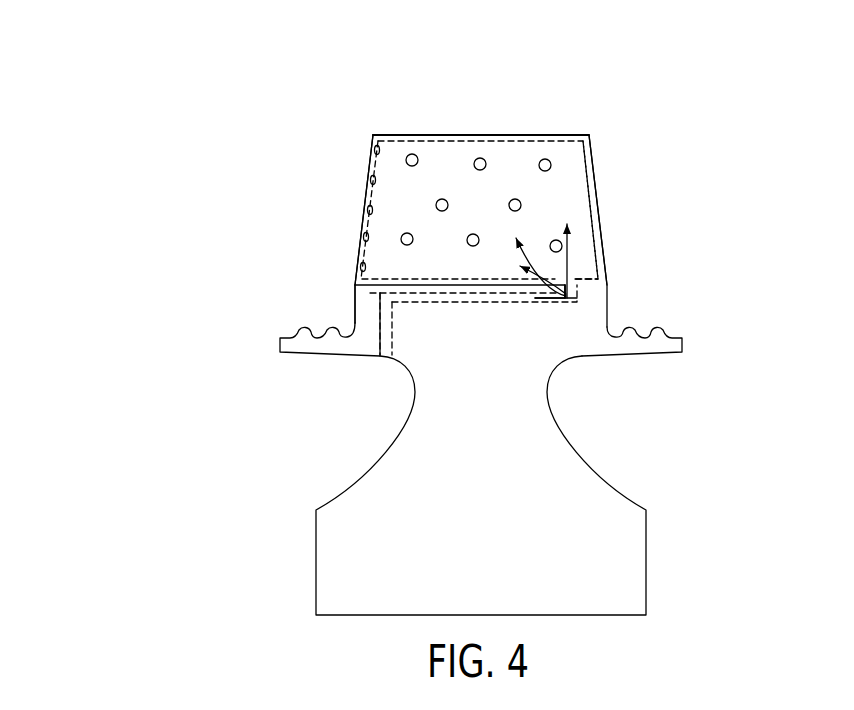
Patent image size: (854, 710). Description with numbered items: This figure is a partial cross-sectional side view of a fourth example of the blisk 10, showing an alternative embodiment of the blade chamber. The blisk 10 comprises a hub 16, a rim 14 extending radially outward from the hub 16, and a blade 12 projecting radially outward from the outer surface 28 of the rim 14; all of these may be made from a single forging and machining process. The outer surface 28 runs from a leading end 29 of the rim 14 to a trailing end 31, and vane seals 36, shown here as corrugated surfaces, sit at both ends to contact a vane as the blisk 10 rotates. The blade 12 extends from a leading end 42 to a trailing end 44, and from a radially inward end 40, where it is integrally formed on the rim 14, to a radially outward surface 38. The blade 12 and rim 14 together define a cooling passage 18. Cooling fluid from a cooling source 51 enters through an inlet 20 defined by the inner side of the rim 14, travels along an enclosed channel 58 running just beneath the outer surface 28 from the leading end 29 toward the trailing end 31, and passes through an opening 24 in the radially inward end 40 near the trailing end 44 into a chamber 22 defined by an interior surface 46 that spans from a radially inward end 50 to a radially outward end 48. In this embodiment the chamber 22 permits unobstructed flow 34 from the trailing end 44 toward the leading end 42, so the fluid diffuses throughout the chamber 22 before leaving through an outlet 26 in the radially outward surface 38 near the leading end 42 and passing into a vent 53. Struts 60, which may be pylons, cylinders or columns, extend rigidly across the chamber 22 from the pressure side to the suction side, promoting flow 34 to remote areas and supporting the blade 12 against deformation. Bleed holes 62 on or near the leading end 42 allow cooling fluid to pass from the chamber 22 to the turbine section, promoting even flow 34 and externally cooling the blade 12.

The blisk 10 is at (118, 236).
The blade 12 is at (288, 207).
The rim 14 is at (275, 365).
The hub 16 is at (255, 548).
The cooling passage 18 is at (567, 142).
The inlet 20 is at (386, 362).
The chamber 22 is at (470, 210).
The opening 24 is at (583, 297).
The outlet 26 is at (400, 128).
The outer surface 28 is at (578, 279).
The leading end 29 is at (354, 320).
The trailing end 31 is at (568, 299).
The flow 34 is at (566, 284).
The vane seals 36 is at (290, 330).
The radially outward surface 38 is at (553, 134).
The radially inward end 40 is at (534, 290).
The leading end 42 is at (360, 227).
The trailing end 44 is at (596, 168).
The interior surface 46 is at (596, 198).
The radially outward end 48 is at (480, 134).
The radially inward end 50 is at (413, 290).
The cooling source 51 is at (320, 422).
The vent 53 is at (412, 64).
The channel 58 is at (485, 303).
The struts 60 is at (408, 233).
The bleed holes 62 is at (367, 208).